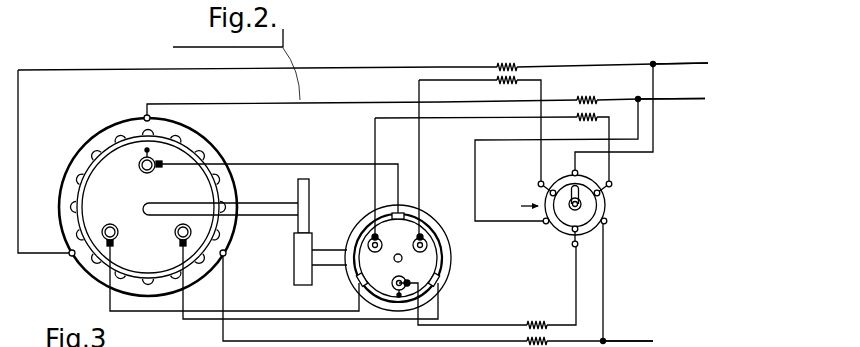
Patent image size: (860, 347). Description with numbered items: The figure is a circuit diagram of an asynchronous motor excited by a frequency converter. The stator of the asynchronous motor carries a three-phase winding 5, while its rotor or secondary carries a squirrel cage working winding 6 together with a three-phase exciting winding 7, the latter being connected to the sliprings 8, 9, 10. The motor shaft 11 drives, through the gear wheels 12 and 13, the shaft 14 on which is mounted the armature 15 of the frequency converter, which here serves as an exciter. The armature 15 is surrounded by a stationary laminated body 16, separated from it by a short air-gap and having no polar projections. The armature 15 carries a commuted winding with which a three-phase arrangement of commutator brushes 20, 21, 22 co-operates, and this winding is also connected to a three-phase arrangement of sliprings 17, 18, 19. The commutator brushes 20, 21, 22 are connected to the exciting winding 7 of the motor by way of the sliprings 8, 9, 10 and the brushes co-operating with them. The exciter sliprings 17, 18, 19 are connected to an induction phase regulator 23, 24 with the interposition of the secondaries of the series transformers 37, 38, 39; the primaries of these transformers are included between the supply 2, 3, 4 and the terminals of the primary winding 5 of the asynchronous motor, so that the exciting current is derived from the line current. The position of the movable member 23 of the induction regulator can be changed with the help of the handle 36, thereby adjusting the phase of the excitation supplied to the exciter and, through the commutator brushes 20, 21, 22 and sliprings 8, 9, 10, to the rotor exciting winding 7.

The supply 2 is at (687, 67).
The supply 3 is at (679, 103).
The supply 4 is at (636, 339).
The three-phase winding 5 is at (118, 121).
The squirrel cage working winding 6 is at (188, 147).
The three-phase exciting winding 7 is at (97, 166).
The slipring 8 is at (142, 162).
The slipring 9 is at (104, 236).
The slipring 10 is at (198, 240).
The shaft 11 is at (260, 207).
The gear wheel 12 is at (305, 189).
The gear wheel 13 is at (300, 273).
The shaft 14 is at (327, 253).
The armature 15 is at (427, 253).
The stationary laminated body 16 is at (440, 213).
The slipring 17 is at (413, 240).
The slipring 18 is at (376, 252).
The slipring 19 is at (409, 280).
The commutator brush 20 is at (352, 284).
The commutator brush 21 is at (404, 213).
The commutator brush 22 is at (443, 279).
The movable member of induction regulator 23 is at (566, 218).
The induction phase regulator 24 is at (519, 205).
The handle 36 is at (582, 197).
The series transformer 37 is at (509, 64).
The series transformer 38 is at (587, 102).
The series transformer 39 is at (538, 324).